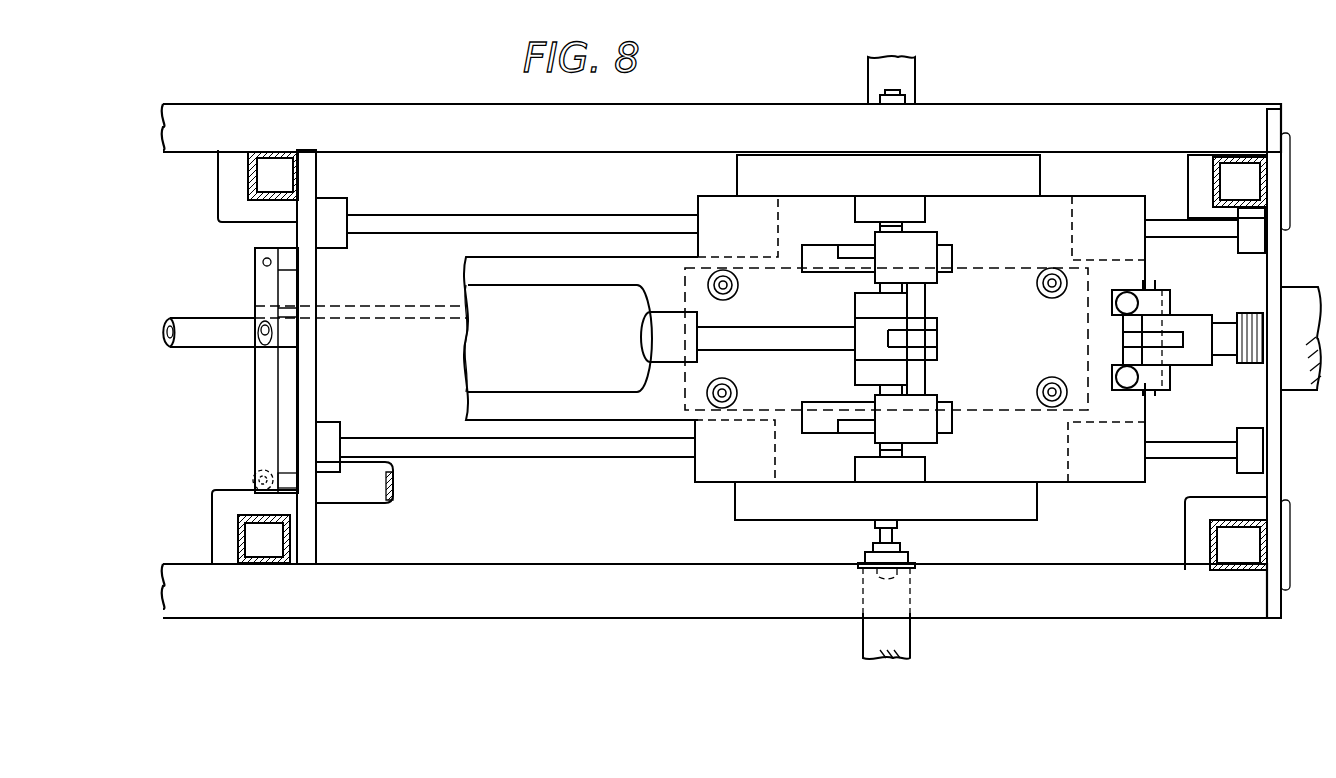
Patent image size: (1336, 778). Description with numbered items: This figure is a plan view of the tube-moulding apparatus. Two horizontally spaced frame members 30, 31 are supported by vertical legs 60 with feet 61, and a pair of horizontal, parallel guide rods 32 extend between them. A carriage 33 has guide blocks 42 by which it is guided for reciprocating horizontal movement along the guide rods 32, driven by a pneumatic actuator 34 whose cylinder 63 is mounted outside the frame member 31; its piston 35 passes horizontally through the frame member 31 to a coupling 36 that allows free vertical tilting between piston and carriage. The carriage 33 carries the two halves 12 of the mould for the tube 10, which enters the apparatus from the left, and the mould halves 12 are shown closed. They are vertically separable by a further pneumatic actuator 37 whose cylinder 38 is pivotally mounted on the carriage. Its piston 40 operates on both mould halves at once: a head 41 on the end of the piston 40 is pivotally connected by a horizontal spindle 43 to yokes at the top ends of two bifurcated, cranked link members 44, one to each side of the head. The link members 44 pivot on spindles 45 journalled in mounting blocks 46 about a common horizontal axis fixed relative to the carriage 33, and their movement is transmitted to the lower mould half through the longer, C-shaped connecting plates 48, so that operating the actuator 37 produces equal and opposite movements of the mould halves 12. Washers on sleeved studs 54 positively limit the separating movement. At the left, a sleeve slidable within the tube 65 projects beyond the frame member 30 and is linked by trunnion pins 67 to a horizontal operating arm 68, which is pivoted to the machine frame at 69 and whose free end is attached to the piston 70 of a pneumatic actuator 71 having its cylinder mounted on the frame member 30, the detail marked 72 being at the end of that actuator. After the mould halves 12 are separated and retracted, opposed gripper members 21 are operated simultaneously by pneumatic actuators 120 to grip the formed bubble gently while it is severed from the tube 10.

The tube 10 is at (210, 347).
The mould halves 12 is at (1000, 268).
The gripper members 21 is at (975, 166).
The frame member 30 is at (316, 390).
The frame member 31 is at (1275, 473).
The guide rods 32 is at (410, 213).
The carriage 33 is at (497, 248).
The pneumatic actuator 34 is at (1290, 290).
The piston 35 is at (1230, 358).
The coupling 36 is at (1185, 312).
The pneumatic actuator 37 is at (492, 394).
The cylinder 38 is at (565, 356).
The piston 40 is at (782, 335).
The head 41 is at (855, 336).
The guide blocks 42 is at (722, 212).
The spindle 43 is at (925, 302).
The link members 44 is at (920, 248).
The spindles 45 is at (880, 228).
The mounting blocks 46 is at (925, 212).
The connecting plates 48 is at (812, 255).
The sleeved studs 54 is at (733, 292).
The vertical legs 60 is at (248, 167).
The feet 61 is at (218, 213).
The cylinder 63 is at (1318, 380).
The tube 65 is at (364, 304).
The trunnion pins 67 is at (262, 322).
The operating arm 68 is at (258, 417).
The pivot 69 is at (265, 262).
The piston 70 is at (280, 475).
The pneumatic actuator 71 is at (360, 504).
The pad 72 is at (390, 490).
The pneumatic actuators 120 is at (915, 80).